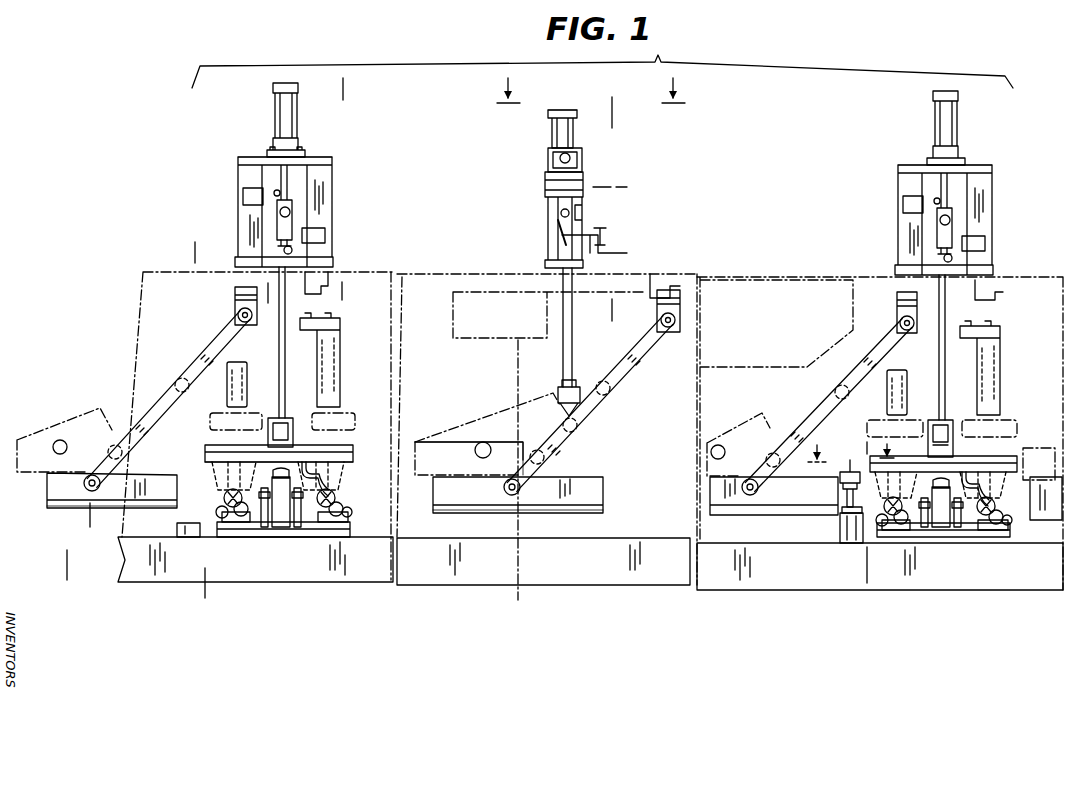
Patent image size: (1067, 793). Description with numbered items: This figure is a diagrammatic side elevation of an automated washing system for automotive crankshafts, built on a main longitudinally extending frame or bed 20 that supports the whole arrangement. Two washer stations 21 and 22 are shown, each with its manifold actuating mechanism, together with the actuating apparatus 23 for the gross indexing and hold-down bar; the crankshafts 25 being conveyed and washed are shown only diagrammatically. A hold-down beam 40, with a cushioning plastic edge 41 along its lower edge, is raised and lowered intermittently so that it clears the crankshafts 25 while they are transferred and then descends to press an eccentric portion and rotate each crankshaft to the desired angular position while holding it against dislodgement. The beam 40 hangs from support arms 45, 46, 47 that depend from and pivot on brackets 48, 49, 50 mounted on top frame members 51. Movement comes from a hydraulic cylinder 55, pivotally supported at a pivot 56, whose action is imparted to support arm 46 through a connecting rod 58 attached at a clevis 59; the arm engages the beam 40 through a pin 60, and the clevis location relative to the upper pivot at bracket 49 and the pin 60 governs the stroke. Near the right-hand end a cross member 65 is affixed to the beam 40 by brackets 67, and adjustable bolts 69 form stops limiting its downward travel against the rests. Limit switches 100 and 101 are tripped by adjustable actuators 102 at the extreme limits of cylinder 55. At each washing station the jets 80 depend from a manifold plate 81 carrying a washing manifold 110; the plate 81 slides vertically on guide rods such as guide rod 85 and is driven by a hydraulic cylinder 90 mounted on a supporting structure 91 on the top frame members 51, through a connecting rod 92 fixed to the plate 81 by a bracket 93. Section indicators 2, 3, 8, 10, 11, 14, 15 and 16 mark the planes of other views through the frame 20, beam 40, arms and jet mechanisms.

The section line 2- 2 is at (252, 302).
The section line 3- 3 is at (192, 248).
The section line 8- 8 is at (104, 466).
The section line 10- 10 is at (859, 445).
The section line 11- 11 is at (866, 450).
The section line 14- 14 is at (345, 85).
The section line 15- 15 is at (630, 105).
The section line 16- 16 is at (591, 103).
The main frame 20 is at (262, 572).
The washer station 21 is at (227, 160).
The washer station 22 is at (1008, 167).
The actuating apparatus 23 is at (618, 173).
The crankshaft 25 is at (223, 502).
The hold-down beam 40 is at (143, 473).
The cushioning plastic edge 41 is at (105, 510).
The support arm 45 is at (160, 405).
The support arm 46 is at (628, 376).
The support arm 47 is at (885, 352).
The bracket 48 is at (235, 304).
The bracket 49 is at (660, 311).
The bracket 50 is at (897, 313).
The top frame member 51 is at (312, 281).
The hydraulic cylinder 55 is at (556, 133).
The pivot 56 is at (556, 160).
The connecting rod 58 is at (574, 356).
The clevis 59 is at (580, 404).
The pin 60 is at (84, 486).
The cross member 65 is at (843, 488).
The bracket 67 is at (842, 532).
The adjustable bolt 69 is at (846, 511).
The jet 80 is at (330, 478).
The manifold plate 81 is at (350, 447).
The guide rod 85 is at (280, 512).
The hydraulic cylinder 90 is at (289, 118).
The supporting structure 91 is at (327, 205).
The connecting rod 92 is at (286, 355).
The bracket 93 is at (290, 430).
The limit switch 100 is at (628, 188).
The limit switch 101 is at (628, 253).
The adjustable actuator 102 is at (602, 235).
The washing manifold 110 is at (205, 460).